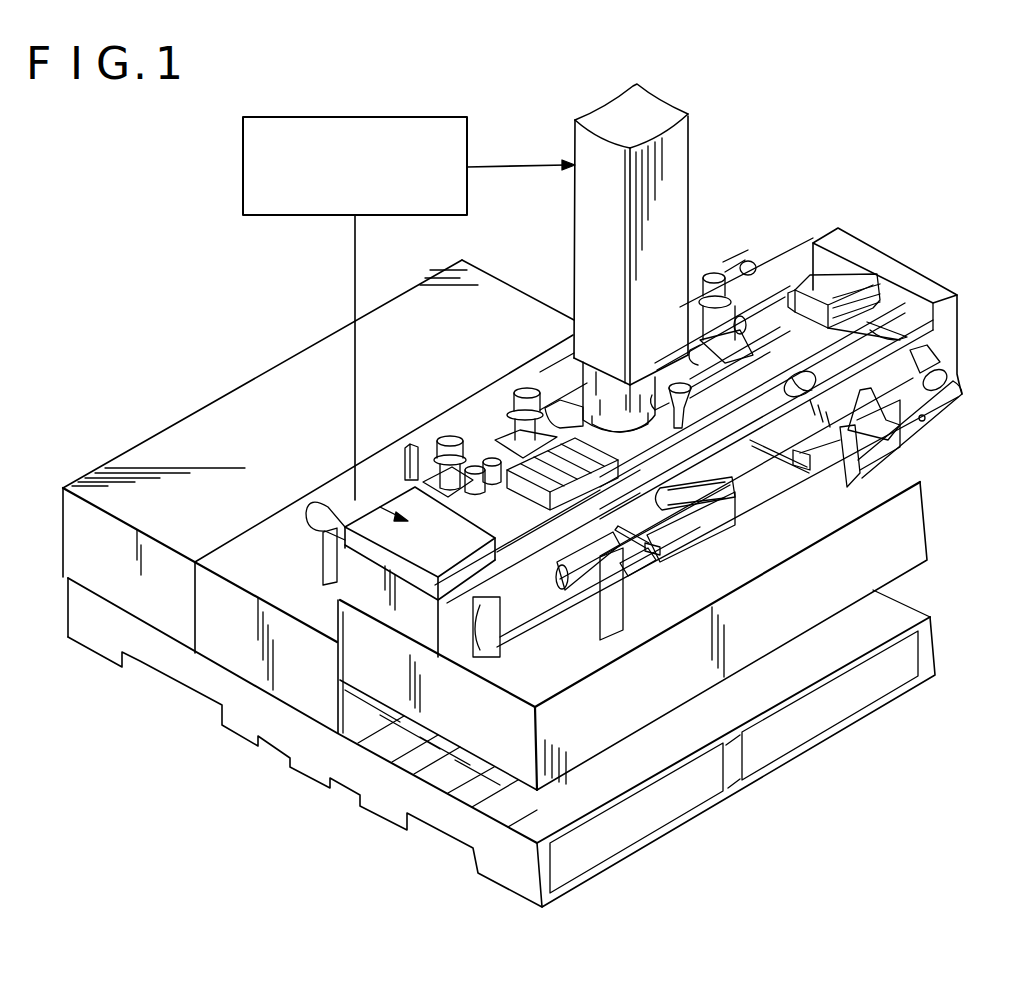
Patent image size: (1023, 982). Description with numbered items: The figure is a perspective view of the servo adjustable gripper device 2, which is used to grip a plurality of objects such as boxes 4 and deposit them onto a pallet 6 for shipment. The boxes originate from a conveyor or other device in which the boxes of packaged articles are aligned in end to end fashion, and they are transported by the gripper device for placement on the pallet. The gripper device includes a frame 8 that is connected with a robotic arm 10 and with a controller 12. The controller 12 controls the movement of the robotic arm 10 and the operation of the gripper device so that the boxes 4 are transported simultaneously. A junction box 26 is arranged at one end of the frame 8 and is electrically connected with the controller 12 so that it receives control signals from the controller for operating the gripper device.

The servo adjustable gripper device 2 is at (816, 208).
The boxes 4 is at (912, 546).
The pallet 6 is at (757, 755).
The frame 8 is at (890, 272).
The robotic arm 10 is at (672, 165).
The controller 12 is at (350, 150).
The junction box 26 is at (449, 552).